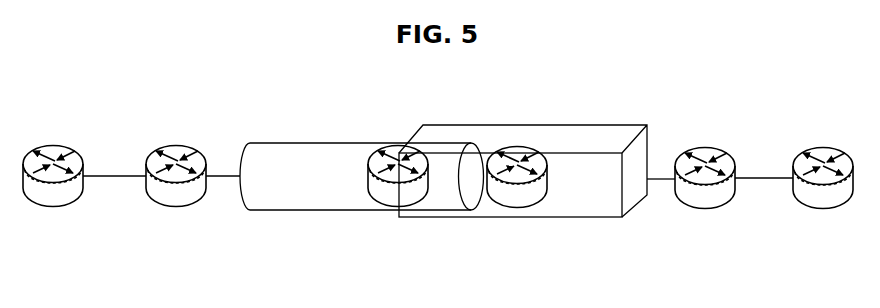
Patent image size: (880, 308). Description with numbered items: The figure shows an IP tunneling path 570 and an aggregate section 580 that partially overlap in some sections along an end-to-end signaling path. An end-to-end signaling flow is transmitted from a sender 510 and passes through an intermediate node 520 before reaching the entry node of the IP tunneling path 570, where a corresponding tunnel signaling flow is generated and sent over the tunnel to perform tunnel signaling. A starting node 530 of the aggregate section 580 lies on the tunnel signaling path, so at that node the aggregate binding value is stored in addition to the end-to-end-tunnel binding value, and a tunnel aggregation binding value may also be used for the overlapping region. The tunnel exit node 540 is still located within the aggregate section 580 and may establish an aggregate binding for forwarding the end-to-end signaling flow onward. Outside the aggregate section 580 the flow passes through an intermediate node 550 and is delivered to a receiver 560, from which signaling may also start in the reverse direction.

The sender 510 is at (50, 207).
The intermediate node 520 is at (173, 207).
The starting node of the aggregate section 530 is at (402, 144).
The tunnel exit node 540 is at (522, 146).
The intermediate node 550 is at (705, 147).
The receiver 560 is at (823, 147).
The IP tunneling path 570 is at (302, 210).
The aggregate section 580 is at (510, 217).